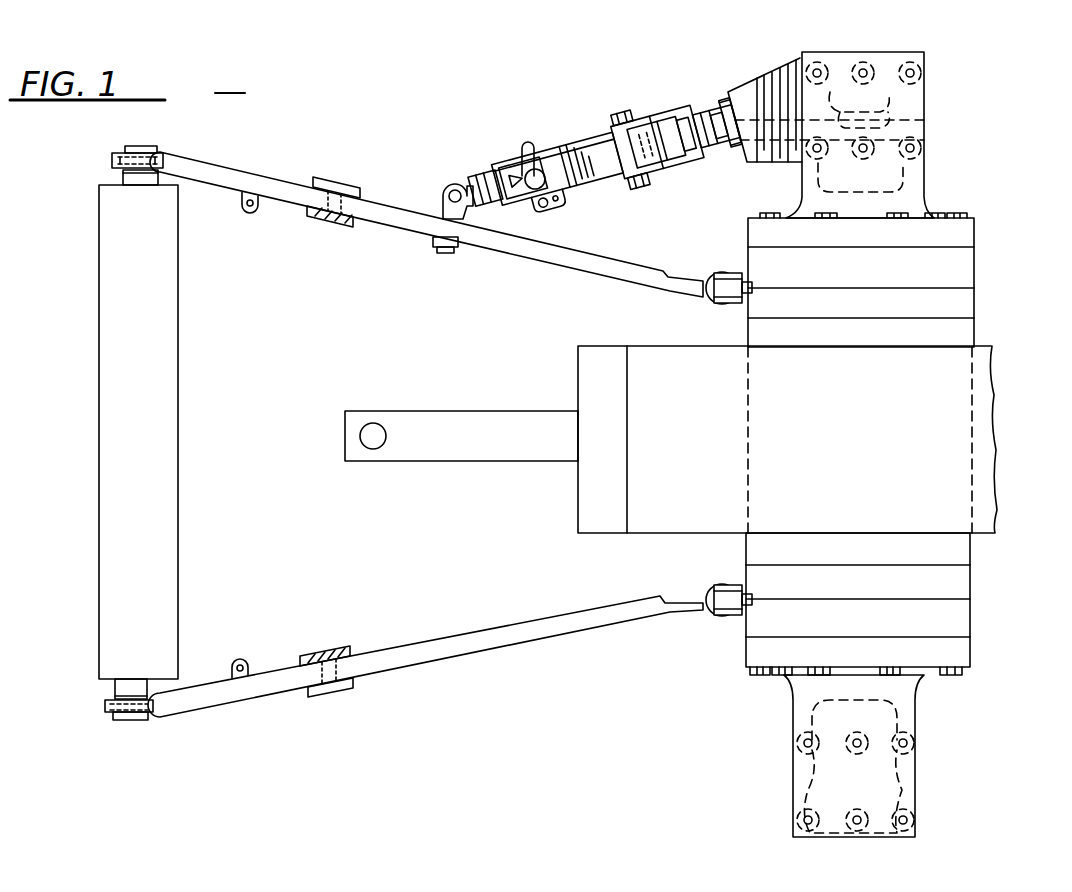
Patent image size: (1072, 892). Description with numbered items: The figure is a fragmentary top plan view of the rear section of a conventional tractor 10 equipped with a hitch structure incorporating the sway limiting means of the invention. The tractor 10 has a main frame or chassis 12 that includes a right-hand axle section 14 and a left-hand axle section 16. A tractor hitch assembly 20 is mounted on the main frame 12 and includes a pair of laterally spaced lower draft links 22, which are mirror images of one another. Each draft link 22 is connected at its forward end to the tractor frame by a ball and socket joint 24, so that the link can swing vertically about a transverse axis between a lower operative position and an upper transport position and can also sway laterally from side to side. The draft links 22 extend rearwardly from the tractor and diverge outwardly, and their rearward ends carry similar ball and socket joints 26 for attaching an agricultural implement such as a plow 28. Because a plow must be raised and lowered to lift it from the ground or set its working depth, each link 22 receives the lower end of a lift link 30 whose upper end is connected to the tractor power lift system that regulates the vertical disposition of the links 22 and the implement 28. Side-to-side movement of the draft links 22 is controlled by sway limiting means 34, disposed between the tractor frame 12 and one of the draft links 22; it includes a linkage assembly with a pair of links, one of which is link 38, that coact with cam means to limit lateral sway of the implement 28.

The tractor 10 is at (1003, 313).
The main frame 12 is at (855, 465).
The right-hand axle section 14 is at (903, 780).
The left-hand axle section 16 is at (913, 108).
The tractor hitch assembly 20 is at (450, 431).
The lower draft link 22 is at (238, 172).
The ball and socket joint 24 is at (722, 298).
The ball and socket joint 26 is at (160, 151).
The plow 28 is at (147, 387).
The lift link 30 is at (327, 223).
The sway limiting means 34 is at (604, 156).
The link 38 is at (478, 175).